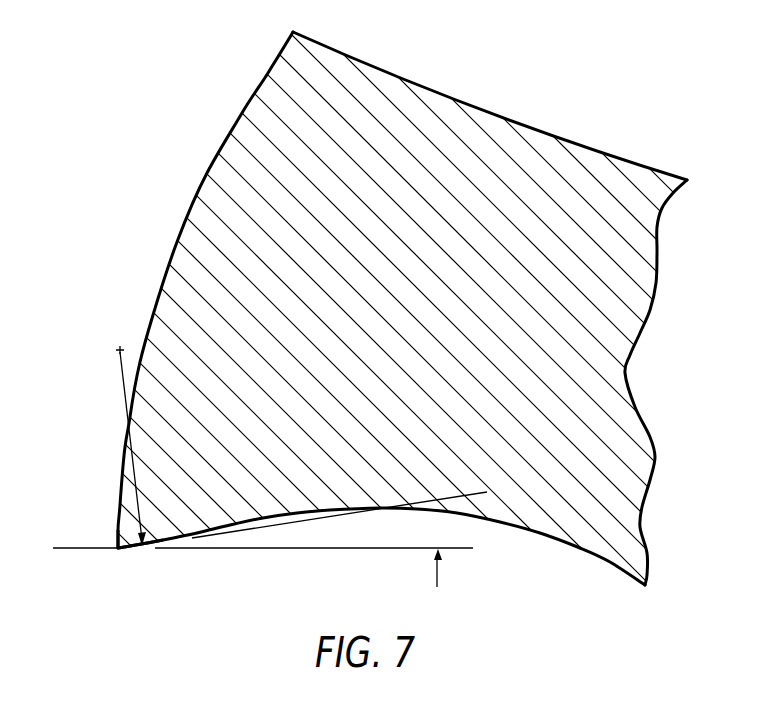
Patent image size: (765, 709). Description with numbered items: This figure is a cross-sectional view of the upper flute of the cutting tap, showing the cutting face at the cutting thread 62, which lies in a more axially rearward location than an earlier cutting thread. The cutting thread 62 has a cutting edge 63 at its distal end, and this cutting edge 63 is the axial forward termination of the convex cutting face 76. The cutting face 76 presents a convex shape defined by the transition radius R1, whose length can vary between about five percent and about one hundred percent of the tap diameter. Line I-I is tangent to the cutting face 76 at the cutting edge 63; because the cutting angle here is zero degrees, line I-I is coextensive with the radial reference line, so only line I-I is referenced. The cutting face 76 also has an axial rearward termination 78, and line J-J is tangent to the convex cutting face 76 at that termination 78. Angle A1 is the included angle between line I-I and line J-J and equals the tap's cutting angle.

The cutting thread 62 is at (257, 112).
The cutting edge 63 is at (118, 548).
The cutting face 76 is at (128, 548).
The axial rearward termination 78 is at (152, 541).
The transition radius R1 is at (125, 388).
The angle A1 is at (435, 498).
The line J- J is at (338, 507).
The line I- I is at (262, 562).